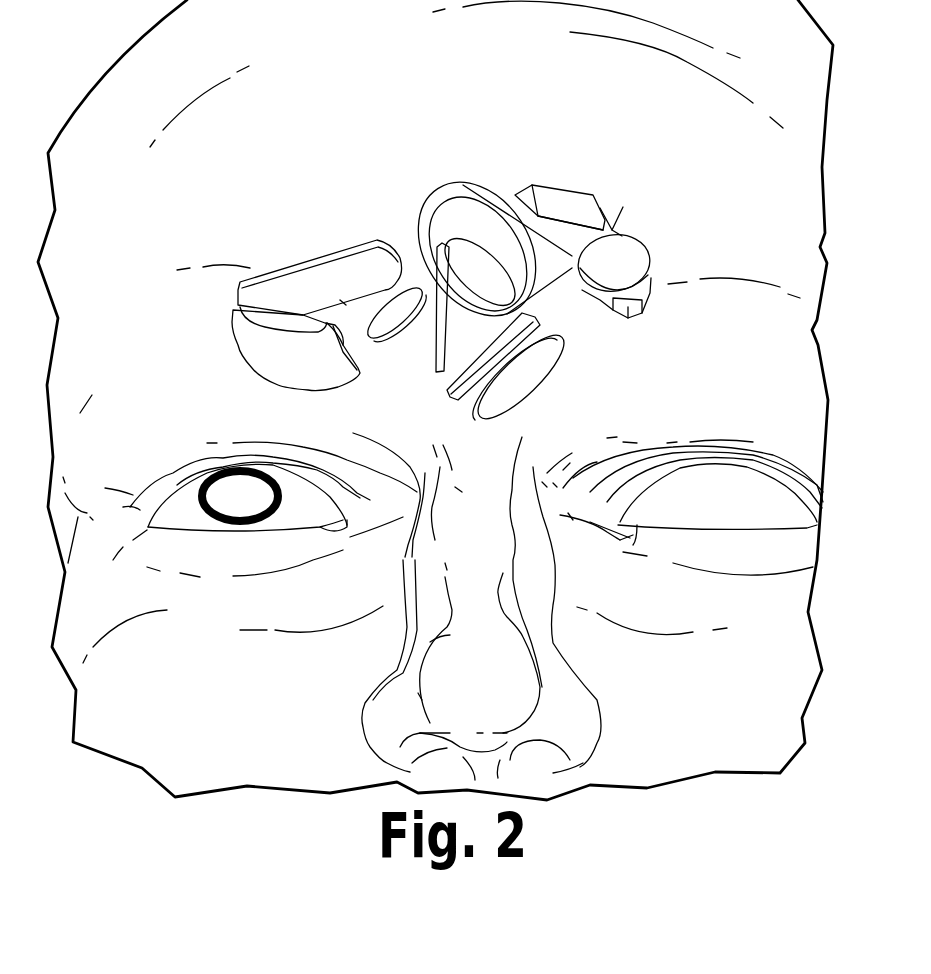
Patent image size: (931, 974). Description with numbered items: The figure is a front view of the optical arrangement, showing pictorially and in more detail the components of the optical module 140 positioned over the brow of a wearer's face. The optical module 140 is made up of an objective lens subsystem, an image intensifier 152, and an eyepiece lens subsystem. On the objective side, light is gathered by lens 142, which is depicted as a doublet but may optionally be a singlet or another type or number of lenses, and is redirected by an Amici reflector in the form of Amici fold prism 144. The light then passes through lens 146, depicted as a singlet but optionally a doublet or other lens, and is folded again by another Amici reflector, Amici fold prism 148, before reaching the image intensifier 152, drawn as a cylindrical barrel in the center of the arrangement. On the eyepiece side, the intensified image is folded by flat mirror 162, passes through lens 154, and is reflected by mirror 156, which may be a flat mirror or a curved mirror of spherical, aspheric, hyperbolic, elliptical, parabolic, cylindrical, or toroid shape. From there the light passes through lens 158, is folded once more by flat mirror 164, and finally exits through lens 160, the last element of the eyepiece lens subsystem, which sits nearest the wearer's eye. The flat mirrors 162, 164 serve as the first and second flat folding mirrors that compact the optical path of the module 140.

The optical module 140 is at (405, 150).
The lens 142 is at (635, 258).
The Amici fold prism 144 is at (632, 312).
The lens 146 is at (604, 237).
The Amici fold prism 148 is at (570, 198).
The image intensifier 152 is at (475, 185).
The lens 154 is at (453, 390).
The mirror 156 is at (533, 377).
The lens 158 is at (400, 330).
The lens 160 is at (226, 324).
The flat mirror 162 is at (426, 268).
The flat mirror 164 is at (352, 240).